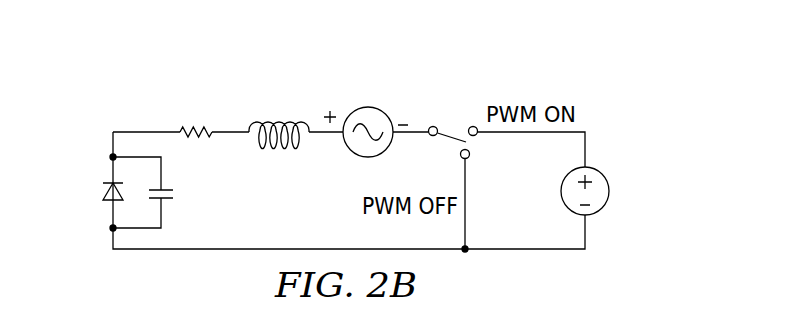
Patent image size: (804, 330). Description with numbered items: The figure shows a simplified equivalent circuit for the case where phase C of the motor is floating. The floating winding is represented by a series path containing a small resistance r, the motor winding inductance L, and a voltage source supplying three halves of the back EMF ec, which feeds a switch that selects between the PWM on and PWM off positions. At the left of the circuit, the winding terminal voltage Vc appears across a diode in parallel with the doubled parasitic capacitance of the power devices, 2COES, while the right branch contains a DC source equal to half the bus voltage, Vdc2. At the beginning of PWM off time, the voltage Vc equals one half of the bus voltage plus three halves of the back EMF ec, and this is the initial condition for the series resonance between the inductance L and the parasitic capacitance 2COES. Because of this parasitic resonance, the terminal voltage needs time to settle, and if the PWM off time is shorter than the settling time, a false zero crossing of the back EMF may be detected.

The voltage Vc is at (145, 104).
The series resistance r is at (196, 113).
The inductance L is at (279, 121).
The back EMF ec is at (360, 78).
The parasitic capacitance Coes 2COES is at (180, 192).
The half DC bus voltage Vdc Vdc2 is at (617, 191).